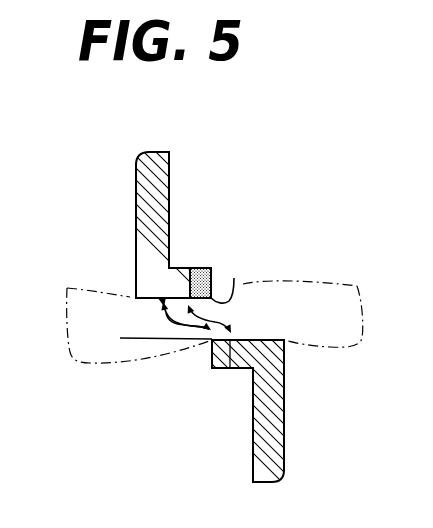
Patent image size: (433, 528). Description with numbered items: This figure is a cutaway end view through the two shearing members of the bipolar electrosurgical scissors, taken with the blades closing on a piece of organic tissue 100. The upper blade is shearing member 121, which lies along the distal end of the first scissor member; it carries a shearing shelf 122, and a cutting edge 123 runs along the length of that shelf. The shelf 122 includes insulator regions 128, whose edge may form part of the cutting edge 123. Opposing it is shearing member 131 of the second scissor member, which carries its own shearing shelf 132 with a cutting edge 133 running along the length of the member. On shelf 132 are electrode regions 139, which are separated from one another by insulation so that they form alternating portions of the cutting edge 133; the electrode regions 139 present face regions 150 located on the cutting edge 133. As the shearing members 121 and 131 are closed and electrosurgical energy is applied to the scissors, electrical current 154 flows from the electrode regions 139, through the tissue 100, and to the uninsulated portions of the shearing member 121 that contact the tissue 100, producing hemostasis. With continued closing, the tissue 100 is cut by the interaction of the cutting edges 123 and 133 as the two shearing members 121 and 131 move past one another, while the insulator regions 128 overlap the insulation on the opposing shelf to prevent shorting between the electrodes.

The tissue 100 is at (333, 302).
The shearing member 121 is at (146, 190).
The shearing shelf 122 is at (174, 258).
The cutting edge 123 is at (234, 278).
The insulator regions 128 is at (208, 266).
The shearing member 131 is at (285, 471).
The shearing shelf 132 is at (240, 372).
The cutting edge 133 is at (120, 338).
The electrode regions 139 is at (215, 370).
The face regions 150 is at (210, 358).
The electrical current 154 is at (166, 313).